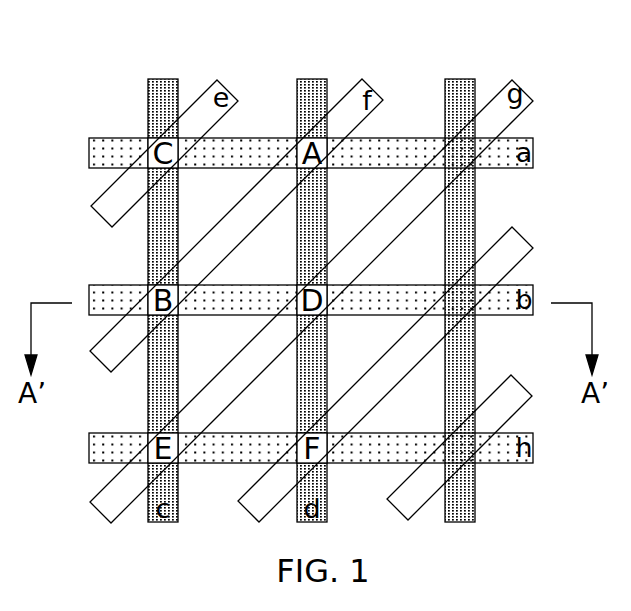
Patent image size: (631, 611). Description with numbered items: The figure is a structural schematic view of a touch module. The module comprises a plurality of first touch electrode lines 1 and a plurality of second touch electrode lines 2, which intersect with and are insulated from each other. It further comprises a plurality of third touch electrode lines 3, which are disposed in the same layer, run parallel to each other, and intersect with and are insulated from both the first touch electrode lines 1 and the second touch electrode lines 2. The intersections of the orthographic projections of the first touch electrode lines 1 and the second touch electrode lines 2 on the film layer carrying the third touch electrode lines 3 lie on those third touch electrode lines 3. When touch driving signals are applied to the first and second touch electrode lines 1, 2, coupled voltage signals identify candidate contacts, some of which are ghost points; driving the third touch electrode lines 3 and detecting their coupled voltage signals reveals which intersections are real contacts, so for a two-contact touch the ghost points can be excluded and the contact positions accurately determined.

The first touch electrode lines 1 is at (120, 138).
The second touch electrode lines 2 is at (163, 79).
The third touch electrode lines 3 is at (362, 79).